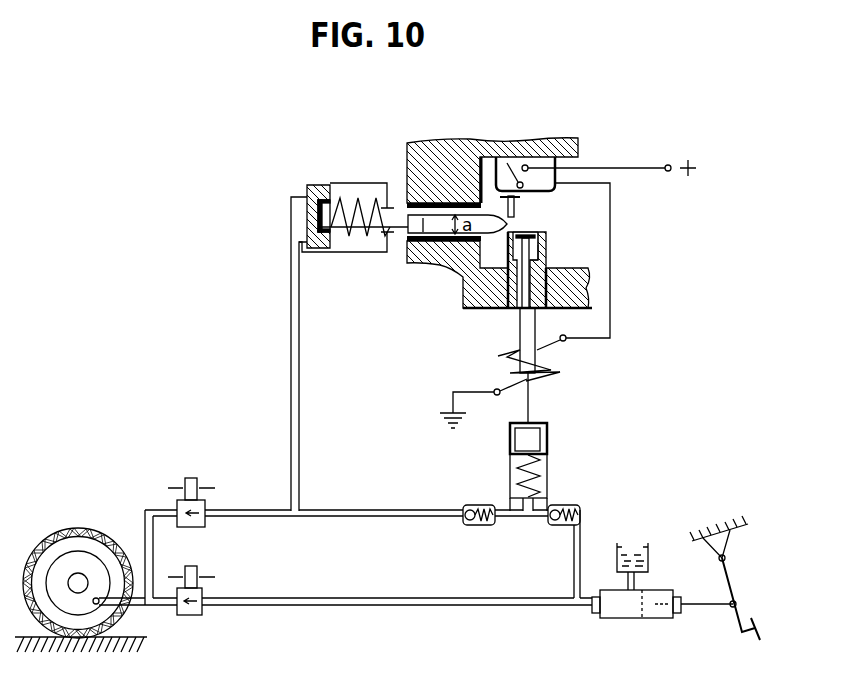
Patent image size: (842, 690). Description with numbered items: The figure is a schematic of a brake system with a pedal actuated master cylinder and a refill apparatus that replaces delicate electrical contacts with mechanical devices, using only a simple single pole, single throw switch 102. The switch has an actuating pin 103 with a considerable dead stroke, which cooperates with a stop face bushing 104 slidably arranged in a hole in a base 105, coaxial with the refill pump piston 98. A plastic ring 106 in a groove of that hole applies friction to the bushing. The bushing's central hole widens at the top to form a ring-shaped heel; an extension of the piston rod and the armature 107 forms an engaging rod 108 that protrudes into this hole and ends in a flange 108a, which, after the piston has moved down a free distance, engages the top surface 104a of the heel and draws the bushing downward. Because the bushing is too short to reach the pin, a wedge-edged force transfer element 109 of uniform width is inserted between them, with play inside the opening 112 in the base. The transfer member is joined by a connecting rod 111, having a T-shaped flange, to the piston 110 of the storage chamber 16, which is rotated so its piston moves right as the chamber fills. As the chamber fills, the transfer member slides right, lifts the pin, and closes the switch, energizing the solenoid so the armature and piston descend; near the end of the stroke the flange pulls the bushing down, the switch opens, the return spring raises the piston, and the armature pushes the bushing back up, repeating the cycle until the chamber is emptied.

The storage chamber 16 is at (290, 212).
The piston 98 is at (547, 432).
The switch 102 is at (538, 163).
The actuating pin 103 is at (515, 207).
The stop face bushing 104 is at (512, 308).
The top surface of the bushing heel 104a is at (540, 254).
The base 105 is at (452, 260).
The plastic ring 106 is at (592, 287).
The armature 107 is at (536, 356).
The engaging rod 108 is at (536, 308).
The flange 108a is at (530, 233).
The force transfer element 109 is at (423, 228).
The piston 110 is at (318, 185).
The connecting rod 111 is at (346, 252).
The opening 112 is at (404, 200).